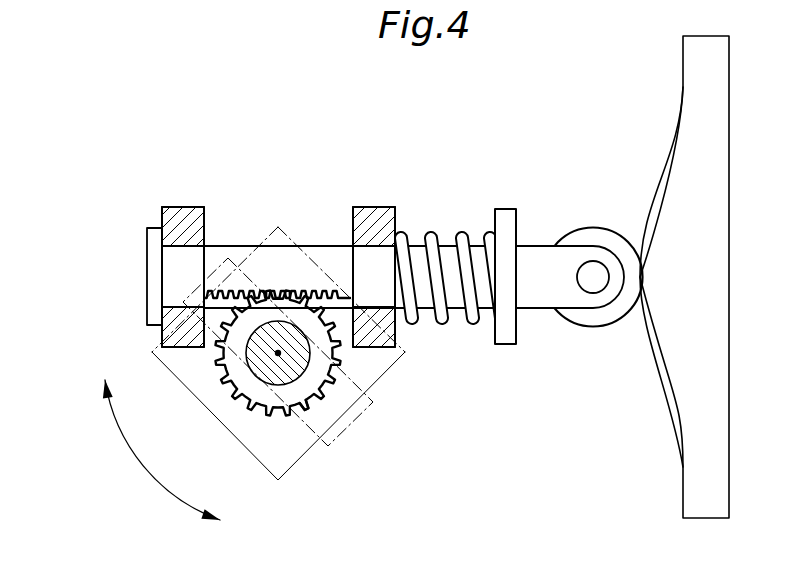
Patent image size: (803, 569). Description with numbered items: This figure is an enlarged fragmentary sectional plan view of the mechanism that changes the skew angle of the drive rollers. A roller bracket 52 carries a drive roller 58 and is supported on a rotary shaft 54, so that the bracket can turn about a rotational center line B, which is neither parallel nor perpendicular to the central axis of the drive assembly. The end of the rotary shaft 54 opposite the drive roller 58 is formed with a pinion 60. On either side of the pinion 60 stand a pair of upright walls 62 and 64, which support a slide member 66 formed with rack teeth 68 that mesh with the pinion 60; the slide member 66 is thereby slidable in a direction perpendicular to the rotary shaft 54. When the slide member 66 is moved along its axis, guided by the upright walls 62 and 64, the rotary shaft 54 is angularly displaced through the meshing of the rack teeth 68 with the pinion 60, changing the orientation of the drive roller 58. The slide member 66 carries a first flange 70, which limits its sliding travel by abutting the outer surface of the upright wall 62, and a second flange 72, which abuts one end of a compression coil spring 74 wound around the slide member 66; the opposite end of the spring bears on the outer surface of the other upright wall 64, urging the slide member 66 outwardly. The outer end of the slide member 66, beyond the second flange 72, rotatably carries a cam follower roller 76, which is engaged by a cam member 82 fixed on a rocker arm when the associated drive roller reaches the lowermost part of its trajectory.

The roller bracket 52 is at (175, 377).
The rotary shaft 54 is at (297, 407).
The drive roller 58 is at (355, 422).
The pinion 60 is at (334, 382).
The upright wall 62 is at (185, 213).
The upright wall 64 is at (368, 212).
The slide member 66 is at (386, 248).
The rack teeth 68 is at (287, 292).
The first flange 70 is at (148, 312).
The second flange 72 is at (505, 342).
The compression coil spring 74 is at (463, 228).
The cam follower roller 76 is at (595, 320).
The cam member 82 is at (672, 147).
The rotational center line B is at (278, 353).